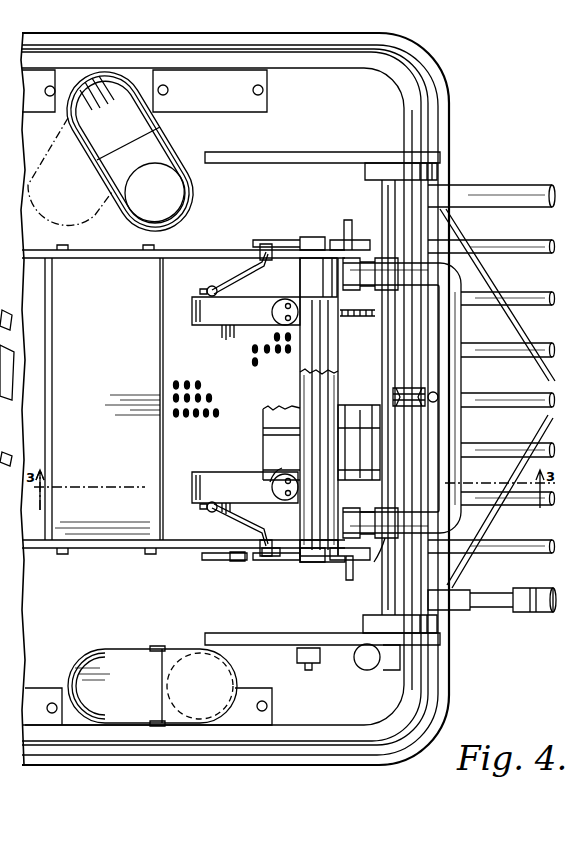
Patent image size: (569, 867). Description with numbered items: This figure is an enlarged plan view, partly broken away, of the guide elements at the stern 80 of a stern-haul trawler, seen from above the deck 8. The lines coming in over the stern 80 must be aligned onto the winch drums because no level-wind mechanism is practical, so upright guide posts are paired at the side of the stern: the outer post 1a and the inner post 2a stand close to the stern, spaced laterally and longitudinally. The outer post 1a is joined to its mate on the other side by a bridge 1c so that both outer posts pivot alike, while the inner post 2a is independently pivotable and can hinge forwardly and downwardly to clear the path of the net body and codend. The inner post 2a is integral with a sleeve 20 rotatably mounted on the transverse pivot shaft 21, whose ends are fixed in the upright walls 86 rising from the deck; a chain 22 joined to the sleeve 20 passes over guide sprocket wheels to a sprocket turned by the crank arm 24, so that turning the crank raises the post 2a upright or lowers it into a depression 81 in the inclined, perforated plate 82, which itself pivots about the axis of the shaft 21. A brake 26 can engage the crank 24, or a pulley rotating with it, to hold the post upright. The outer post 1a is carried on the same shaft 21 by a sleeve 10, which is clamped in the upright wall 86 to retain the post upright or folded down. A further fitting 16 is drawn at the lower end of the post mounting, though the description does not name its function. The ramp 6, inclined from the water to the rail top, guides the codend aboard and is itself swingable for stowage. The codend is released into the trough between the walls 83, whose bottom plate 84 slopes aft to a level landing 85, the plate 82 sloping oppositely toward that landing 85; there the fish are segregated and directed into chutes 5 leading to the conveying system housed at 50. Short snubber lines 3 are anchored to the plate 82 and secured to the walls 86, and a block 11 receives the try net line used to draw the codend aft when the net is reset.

The outer guide post 1a is at (377, 242).
The bridge 1c is at (460, 370).
The inner guide post 2a is at (272, 322).
The snubber line 3 is at (232, 282).
The chute 5 is at (162, 148).
The ramp 6 is at (522, 188).
The deck 8 is at (346, 121).
The sleeve 10 is at (298, 276).
The block 11 is at (394, 389).
The elbow fitting 16 is at (386, 538).
The sleeve 20 is at (262, 443).
The pivot shaft 21 is at (312, 388).
The chain 22 is at (356, 322).
The crank arm 24 is at (342, 224).
The brake 26 is at (280, 468).
The housing 50 is at (232, 104).
The stern 80 is at (452, 116).
The depression 81 is at (200, 305).
The inclined perforated plate 82 is at (172, 438).
The trough wall 83 is at (112, 248).
The bottom plate 84 is at (53, 420).
The landing 85 is at (118, 357).
The upright wall 86 is at (262, 556).